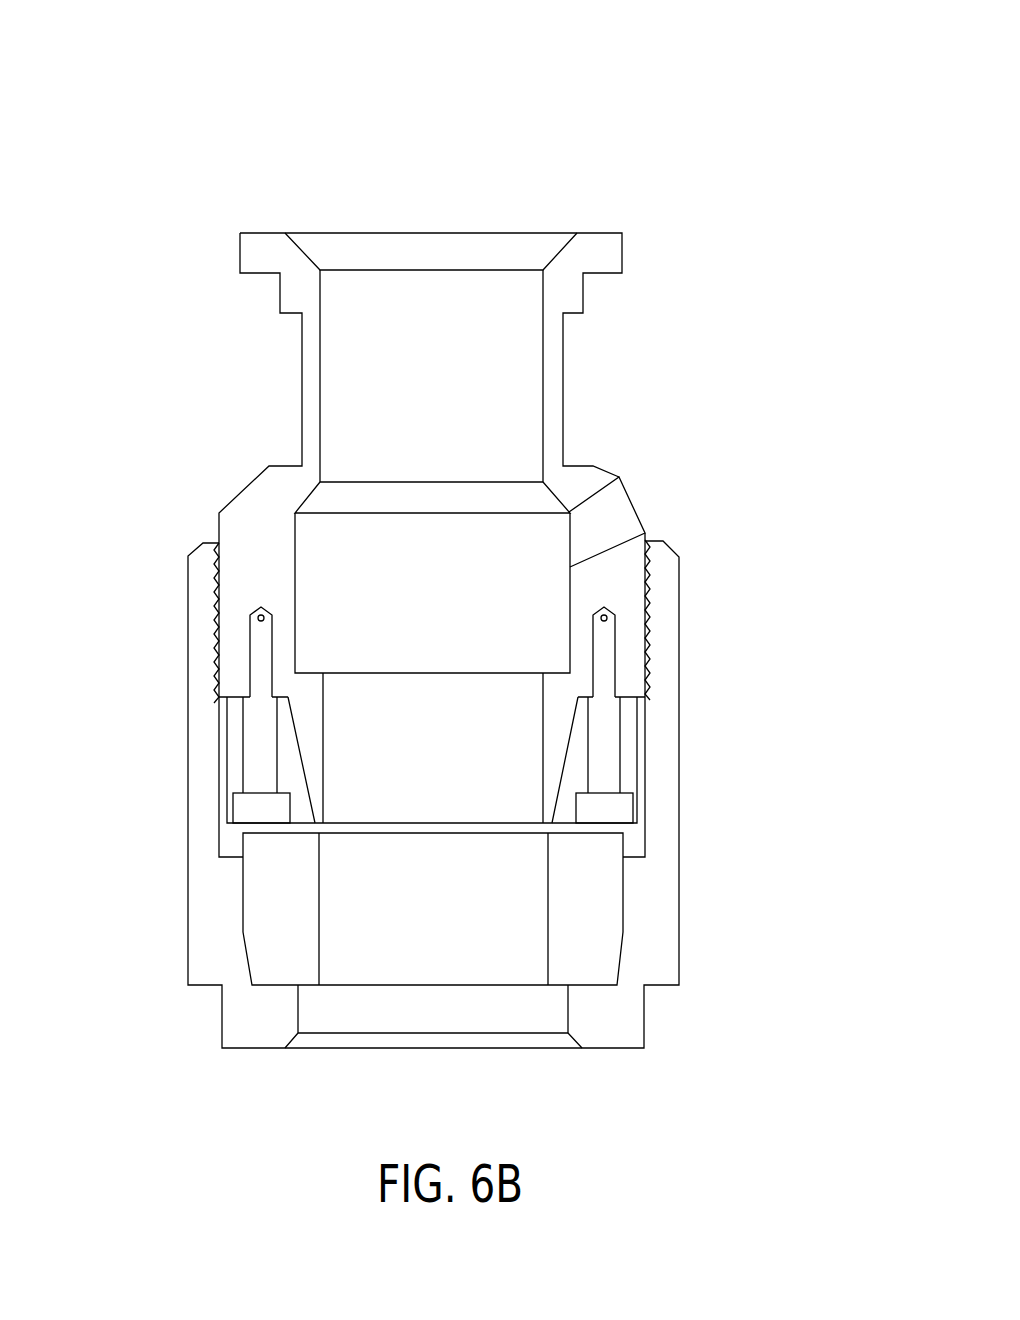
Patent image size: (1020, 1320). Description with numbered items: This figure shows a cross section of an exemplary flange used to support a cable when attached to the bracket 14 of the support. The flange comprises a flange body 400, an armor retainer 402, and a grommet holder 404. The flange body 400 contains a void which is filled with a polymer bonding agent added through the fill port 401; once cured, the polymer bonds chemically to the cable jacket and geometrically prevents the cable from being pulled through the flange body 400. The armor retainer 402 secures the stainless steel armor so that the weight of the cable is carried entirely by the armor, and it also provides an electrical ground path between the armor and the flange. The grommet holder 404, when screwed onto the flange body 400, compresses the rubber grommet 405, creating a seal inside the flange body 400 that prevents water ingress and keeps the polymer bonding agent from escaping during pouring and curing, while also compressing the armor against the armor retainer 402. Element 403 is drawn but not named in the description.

The bracket 14 is at (500, 160).
The flange body 400 is at (258, 252).
The fill port 401 is at (617, 515).
The armor retainer 402 is at (628, 729).
The left pin 403 is at (257, 737).
The grommet holder 404 is at (208, 898).
The rubber grommet 405 is at (603, 910).